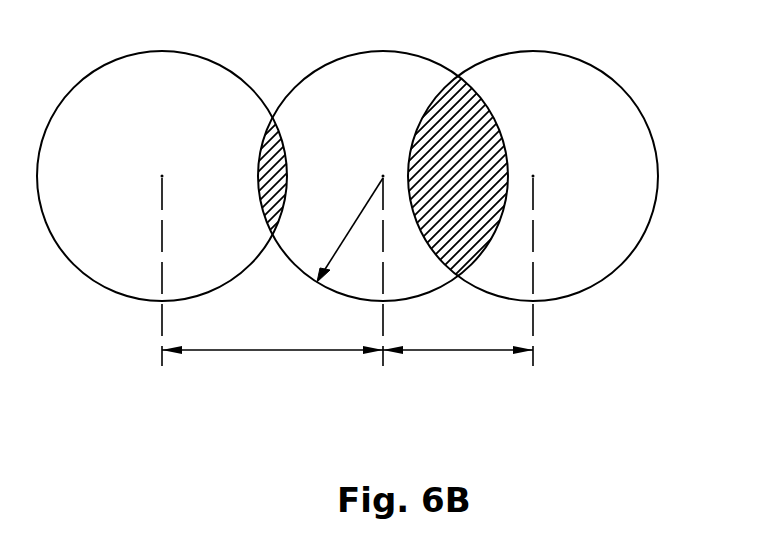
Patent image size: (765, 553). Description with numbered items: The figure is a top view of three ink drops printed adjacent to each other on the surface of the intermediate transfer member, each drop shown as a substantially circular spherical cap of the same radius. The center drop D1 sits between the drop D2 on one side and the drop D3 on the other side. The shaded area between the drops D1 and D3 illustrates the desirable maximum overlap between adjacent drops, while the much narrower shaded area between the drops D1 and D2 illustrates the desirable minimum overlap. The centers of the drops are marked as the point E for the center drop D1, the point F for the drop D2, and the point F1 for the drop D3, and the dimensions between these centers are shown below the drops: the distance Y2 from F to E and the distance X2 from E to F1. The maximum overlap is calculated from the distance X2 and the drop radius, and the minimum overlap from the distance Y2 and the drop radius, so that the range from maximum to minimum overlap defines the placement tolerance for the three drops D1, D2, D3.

The ink drop D1 is at (407, 52).
The ink drop D2 is at (180, 52).
The ink drop D3 is at (555, 52).
The center of circle D1 E is at (384, 257).
The center of circle D2 F is at (162, 257).
The center of circle D3 F1 is at (542, 257).
The center-to-center distance Y2 is at (272, 362).
The center-to-center distance X2 is at (458, 362).